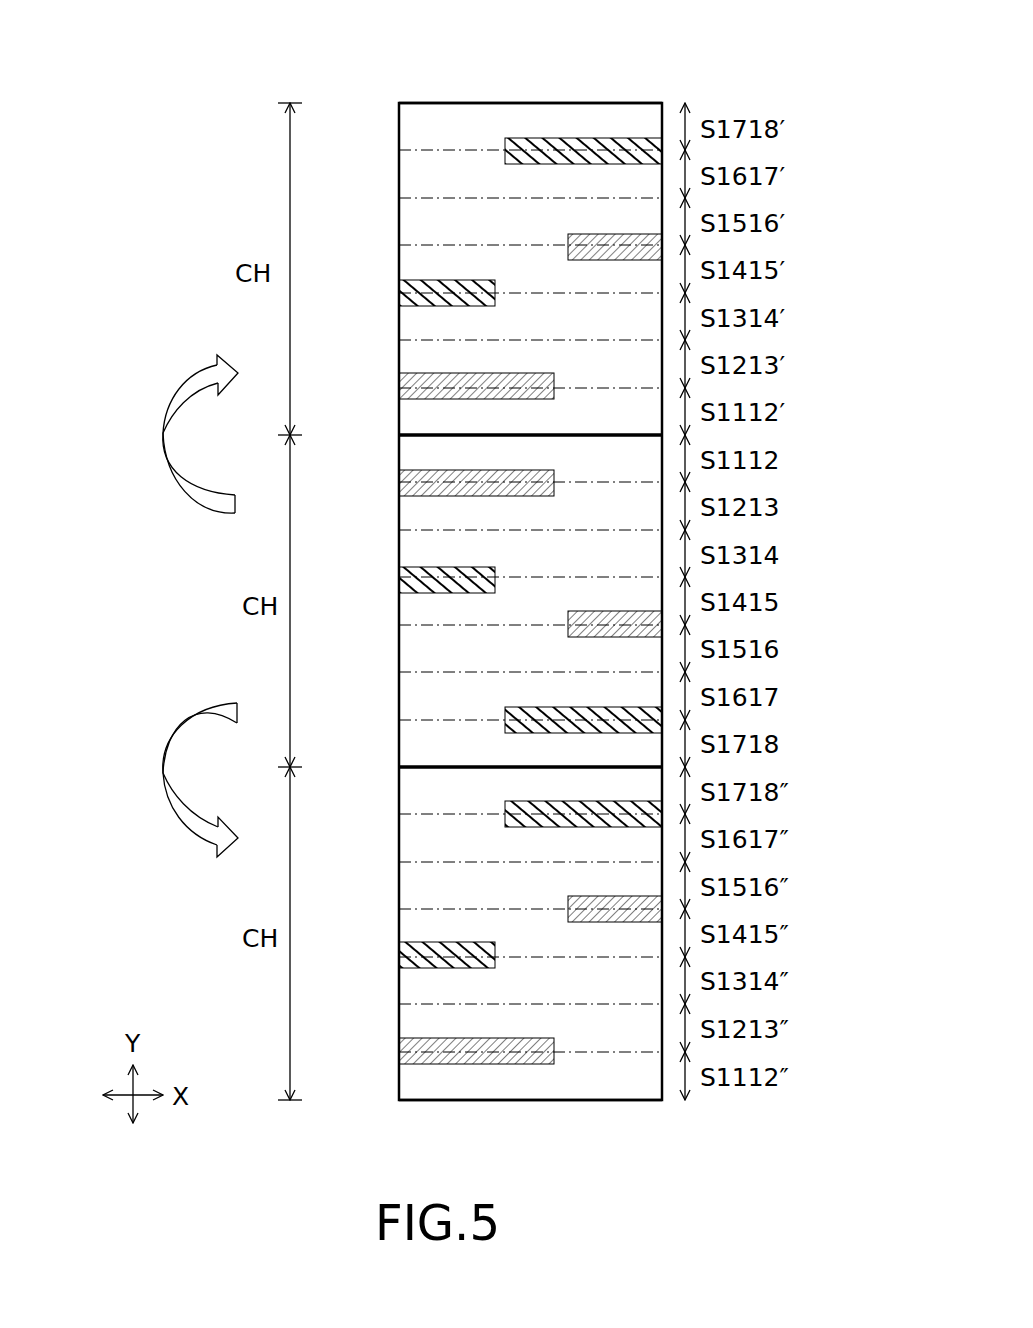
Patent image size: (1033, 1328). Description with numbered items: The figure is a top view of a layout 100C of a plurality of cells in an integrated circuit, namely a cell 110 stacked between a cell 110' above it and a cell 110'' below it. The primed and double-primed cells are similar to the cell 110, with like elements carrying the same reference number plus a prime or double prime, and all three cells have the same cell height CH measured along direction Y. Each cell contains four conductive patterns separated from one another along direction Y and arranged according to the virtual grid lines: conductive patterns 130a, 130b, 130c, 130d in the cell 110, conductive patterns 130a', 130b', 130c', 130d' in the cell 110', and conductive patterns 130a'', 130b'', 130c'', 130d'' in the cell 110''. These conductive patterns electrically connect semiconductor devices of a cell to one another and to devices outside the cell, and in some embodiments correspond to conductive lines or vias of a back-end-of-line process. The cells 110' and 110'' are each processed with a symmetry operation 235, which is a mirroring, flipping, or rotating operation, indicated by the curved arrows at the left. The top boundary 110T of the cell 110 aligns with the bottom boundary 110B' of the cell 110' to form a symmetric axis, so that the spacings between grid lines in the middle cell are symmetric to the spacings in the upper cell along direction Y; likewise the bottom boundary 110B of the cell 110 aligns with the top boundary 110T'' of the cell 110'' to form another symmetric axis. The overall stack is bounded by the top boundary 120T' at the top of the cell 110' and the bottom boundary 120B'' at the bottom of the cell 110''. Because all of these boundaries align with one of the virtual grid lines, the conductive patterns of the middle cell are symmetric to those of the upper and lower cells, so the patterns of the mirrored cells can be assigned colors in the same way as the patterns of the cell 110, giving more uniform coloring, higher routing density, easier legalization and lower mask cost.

The layout 100C is at (560, 50).
The top boundary 120T' is at (530, 77).
The bottom boundary 120B'' is at (531, 1128).
The cell 110' is at (502, 269).
The cell 110 is at (502, 601).
The cell 110'' is at (501, 933).
The bottom boundary of cell 110' 110B' is at (485, 416).
The top boundary of cell 110 110T is at (494, 459).
The bottom boundary of cell 110 110B is at (481, 748).
The top boundary of cell 110'' 110T'' is at (485, 787).
The conductive pattern 130a' is at (491, 368).
The conductive pattern 130b' is at (447, 275).
The conductive pattern 130c' is at (615, 267).
The conductive pattern 130d' is at (583, 171).
The conductive pattern 130a is at (487, 503).
The conductive pattern 130b is at (447, 561).
The conductive pattern 130c is at (615, 607).
The conductive pattern 130d is at (575, 702).
The conductive pattern 130a'' is at (479, 1033).
The conductive pattern 130b'' is at (447, 938).
The conductive pattern 130c'' is at (615, 928).
The conductive pattern 130d'' is at (575, 832).
The symmetry operation 235 is at (163, 433).